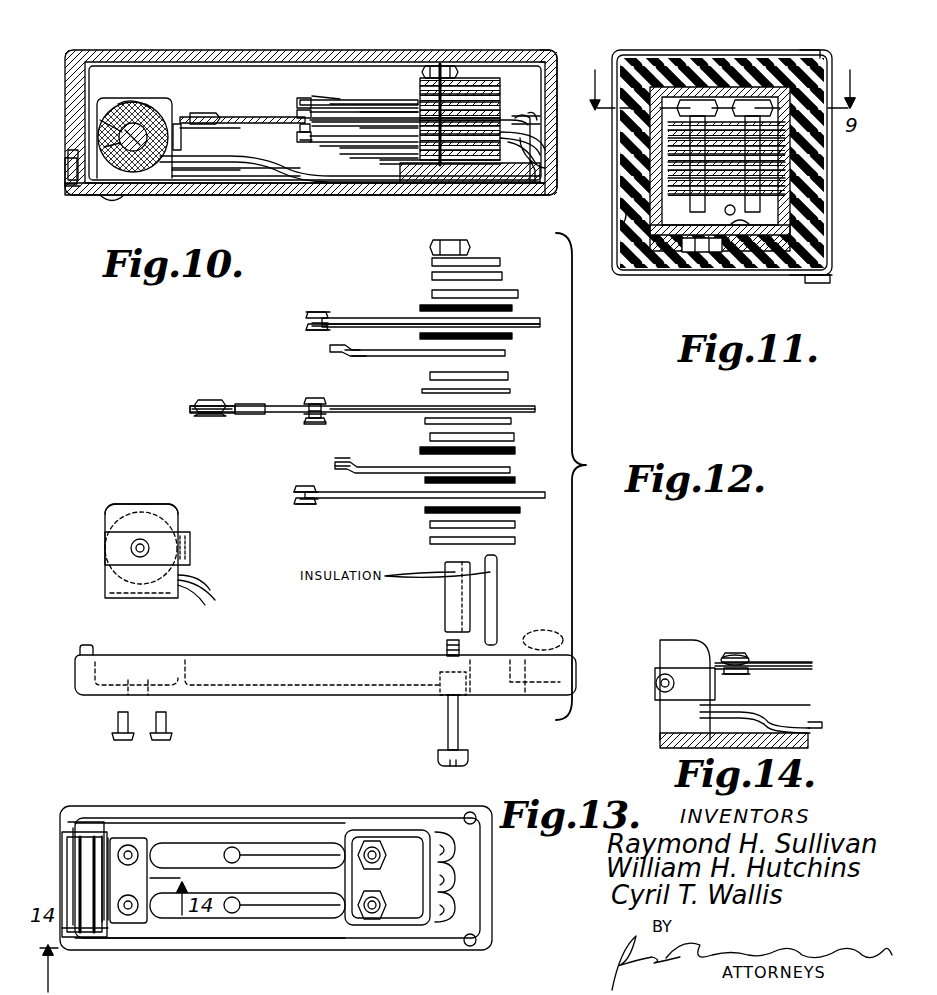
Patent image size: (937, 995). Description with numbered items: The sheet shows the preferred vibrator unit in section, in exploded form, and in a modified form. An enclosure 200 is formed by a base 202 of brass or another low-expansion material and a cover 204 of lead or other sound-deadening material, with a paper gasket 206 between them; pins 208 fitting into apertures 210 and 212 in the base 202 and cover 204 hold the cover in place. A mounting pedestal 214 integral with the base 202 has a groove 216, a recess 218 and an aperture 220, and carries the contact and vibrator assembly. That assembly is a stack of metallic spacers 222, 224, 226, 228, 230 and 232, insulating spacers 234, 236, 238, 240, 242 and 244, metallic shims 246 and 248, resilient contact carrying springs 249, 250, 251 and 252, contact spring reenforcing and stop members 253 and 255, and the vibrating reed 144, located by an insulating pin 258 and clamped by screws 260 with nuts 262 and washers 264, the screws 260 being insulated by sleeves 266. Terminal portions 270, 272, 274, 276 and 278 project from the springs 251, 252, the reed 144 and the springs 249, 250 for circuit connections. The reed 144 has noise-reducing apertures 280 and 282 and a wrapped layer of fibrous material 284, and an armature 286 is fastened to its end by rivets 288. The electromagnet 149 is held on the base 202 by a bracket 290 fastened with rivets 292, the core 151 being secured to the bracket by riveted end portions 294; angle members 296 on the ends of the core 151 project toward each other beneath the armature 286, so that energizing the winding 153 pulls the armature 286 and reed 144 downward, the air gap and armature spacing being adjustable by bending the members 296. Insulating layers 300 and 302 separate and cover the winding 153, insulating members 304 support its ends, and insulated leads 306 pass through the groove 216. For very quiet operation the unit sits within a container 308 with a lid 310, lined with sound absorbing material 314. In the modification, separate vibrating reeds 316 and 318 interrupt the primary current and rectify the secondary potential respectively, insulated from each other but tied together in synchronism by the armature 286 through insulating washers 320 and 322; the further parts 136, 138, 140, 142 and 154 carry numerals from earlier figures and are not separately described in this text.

In FIG. 10, the contact spring arm 136 is at (292, 27).
In FIG. 12, the contact spring arm 136 is at (263, 329).
In FIG. 10, the contact spring arm 138 is at (312, 142).
In FIG. 12, the contact spring arm 138 is at (272, 475).
In FIG. 10, the terminal nut 140 is at (262, 98).
In FIG. 12, the terminal nut 140 is at (303, 379).
In FIG. 10, the terminal nut 142 is at (298, 128).
In FIG. 12, the terminal nut 142 is at (316, 420).
In FIG. 12, the vibrating reed 144 is at (372, 413).
In FIG. 10, the electromagnet 149 is at (102, 115).
In FIG. 12, the electromagnet 149 is at (118, 522).
In FIG. 13, the electromagnet 149 is at (65, 855).
In FIG. 10, the core 151 is at (132, 126).
In FIG. 10, the winding 153 is at (112, 103).
In FIG. 10, the nut 154 is at (305, 128).
In FIG. 10, the enclosure 200 is at (547, 38).
In FIG. 10, the base 202 is at (158, 196).
In FIG. 11, the base 202 is at (668, 254).
In FIG. 12, the base 202 is at (390, 697).
In FIG. 13, the base 202 is at (330, 806).
In FIG. 14, the base 202 is at (666, 740).
In FIG. 10, the cover 204 is at (92, 53).
In FIG. 11, the cover 204 is at (766, 52).
In FIG. 10, the gasket 206 is at (548, 178).
In FIG. 14, the gasket 206 is at (804, 706).
In FIG. 10, the pins 208 is at (70, 171).
In FIG. 12, the pins 208 is at (84, 650).
In FIG. 13, the pins 208 is at (466, 812).
In FIG. 10, the apertures 210 is at (72, 194).
In FIG. 10, the apertures 212 is at (70, 155).
In FIG. 10, the mounting pedestal 214 is at (512, 186).
In FIG. 12, the mounting pedestal 214 is at (528, 668).
In FIG. 11, the groove 216 is at (706, 253).
In FIG. 11, the recess 218 is at (792, 200).
In FIG. 11, the aperture 220 is at (618, 212).
In FIG. 12, the metallic spacer 222 is at (515, 541).
In FIG. 12, the metallic spacer 224 is at (515, 525).
In FIG. 12, the metallic spacer 226 is at (514, 437).
In FIG. 12, the metallic spacer 228 is at (508, 376).
In FIG. 12, the metallic spacer 230 is at (512, 289).
In FIG. 12, the metallic spacer 232 is at (430, 275).
In FIG. 12, the insulating spacer 234 is at (520, 510).
In FIG. 12, the insulating spacer 236 is at (512, 468).
In FIG. 12, the insulating spacer 238 is at (424, 450).
In FIG. 12, the insulating spacer 240 is at (510, 355).
In FIG. 12, the insulating spacer 242 is at (514, 336).
In FIG. 12, the insulating spacer 244 is at (420, 307).
In FIG. 12, the metallic shim 246 is at (512, 421).
In FIG. 12, the metallic shim 248 is at (428, 391).
In FIG. 10, the contact carrying spring 249 is at (332, 138).
In FIG. 12, the contact carrying spring 249 is at (380, 499).
In FIG. 13, the contact carrying spring 249 is at (290, 785).
In FIG. 13, the contact carrying spring 250 is at (272, 912).
In FIG. 10, the contact carrying spring 251 is at (334, 78).
In FIG. 12, the contact carrying spring 251 is at (300, 299).
In FIG. 10, the contact carrying spring 252 is at (530, 1).
In FIG. 10, the contact spring reenforcing and stop member 253 is at (392, 163).
In FIG. 12, the contact spring reenforcing and stop member 253 is at (358, 450).
In FIG. 10, the contact spring reenforcing and stop member 255 is at (380, 23).
In FIG. 12, the contact spring reenforcing and stop member 255 is at (382, 380).
In FIG. 12, the insulating pin 258 is at (498, 605).
In FIG. 10, the screws 260 is at (440, 64).
In FIG. 12, the screws 260 is at (462, 718).
In FIG. 13, the screws 260 is at (372, 848).
In FIG. 10, the nuts 262 is at (458, 68).
In FIG. 12, the nuts 262 is at (430, 247).
In FIG. 13, the nuts 262 is at (384, 860).
In FIG. 10, the washers 264 is at (466, 80).
In FIG. 12, the washers 264 is at (470, 259).
In FIG. 12, the insulating sleeves 266 is at (444, 605).
In FIG. 10, the terminal portion 270 is at (603, 30).
In FIG. 12, the terminal portion 270 is at (562, 294).
In FIG. 12, the terminal portion 272 is at (431, 325).
In FIG. 10, the terminal portion 274 is at (528, 122).
In FIG. 12, the terminal portion 274 is at (530, 408).
In FIG. 10, the terminal portion 276 is at (603, 158).
In FIG. 12, the terminal portion 276 is at (570, 480).
In FIG. 10, the terminal portion 278 is at (521, 152).
In FIG. 10, the aperture 280 is at (386, 118).
In FIG. 10, the aperture 282 is at (218, 172).
In FIG. 10, the fibrous material layer 284 is at (224, 126).
In FIG. 12, the fibrous material layer 284 is at (232, 416).
In FIG. 10, the armature 286 is at (200, 114).
In FIG. 12, the armature 286 is at (190, 409).
In FIG. 13, the armature 286 is at (146, 872).
In FIG. 14, the armature 286 is at (720, 656).
In FIG. 10, the rivets 288 is at (205, 113).
In FIG. 12, the rivets 288 is at (210, 404).
In FIG. 14, the rivets 288 is at (735, 675).
In FIG. 10, the bracket member 290 is at (155, 100).
In FIG. 12, the bracket member 290 is at (168, 516).
In FIG. 13, the bracket member 290 is at (80, 948).
In FIG. 14, the bracket member 290 is at (668, 652).
In FIG. 10, the rivets 292 is at (108, 200).
In FIG. 12, the rivets 292 is at (170, 740).
In FIG. 12, the riveted core end portions 294 is at (134, 554).
In FIG. 14, the riveted core end portions 294 is at (656, 682).
In FIG. 10, the magnetic angle members 296 is at (176, 123).
In FIG. 12, the magnetic angle members 296 is at (118, 546).
In FIG. 13, the magnetic angle members 296 is at (108, 935).
In FIG. 14, the magnetic angle members 296 is at (670, 700).
In FIG. 10, the insulating layer 300 is at (104, 146).
In FIG. 10, the insulating layer 302 is at (100, 120).
In FIG. 13, the insulating members 304 is at (78, 822).
In FIG. 10, the insulated leads 306 is at (246, 180).
In FIG. 11, the insulated leads 306 is at (756, 254).
In FIG. 12, the insulated leads 306 is at (196, 596).
In FIG. 14, the insulated leads 306 is at (787, 723).
In FIG. 11, the container 308 is at (650, 52).
In FIG. 11, the lid 310 is at (828, 279).
In FIG. 11, the sound absorbing material 314 is at (716, 52).
In FIG. 13, the vibrating reed member 316 is at (195, 920).
In FIG. 14, the vibrating reed member 316 is at (850, 639).
In FIG. 13, the vibrating reed member 318 is at (194, 842).
In FIG. 14, the insulating washer 320 is at (752, 670).
In FIG. 13, the insulating washer 322 is at (130, 840).
In FIG. 14, the insulating washer 322 is at (750, 660).